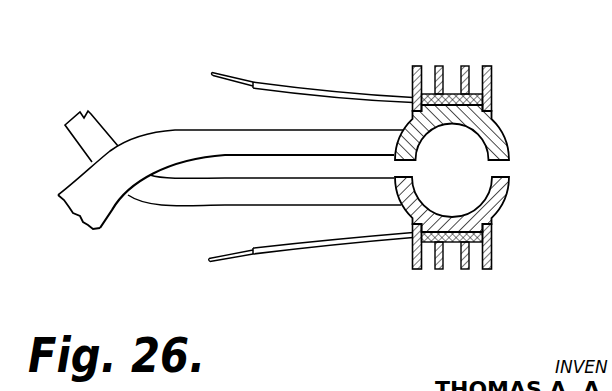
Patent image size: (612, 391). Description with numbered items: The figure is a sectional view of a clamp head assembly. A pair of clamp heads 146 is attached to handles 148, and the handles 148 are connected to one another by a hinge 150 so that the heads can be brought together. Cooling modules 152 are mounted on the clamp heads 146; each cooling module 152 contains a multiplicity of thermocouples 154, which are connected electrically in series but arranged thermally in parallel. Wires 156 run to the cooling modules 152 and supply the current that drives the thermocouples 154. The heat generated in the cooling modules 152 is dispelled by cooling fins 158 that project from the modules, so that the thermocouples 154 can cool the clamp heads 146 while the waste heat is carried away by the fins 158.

The clamp head 146 is at (505, 143).
The handle 148 is at (88, 123).
The hinge 150 is at (124, 166).
The cooling module 152 is at (493, 80).
The thermocouple 154 is at (449, 100).
The wire 156 is at (278, 85).
The cooling fin 158 is at (439, 65).